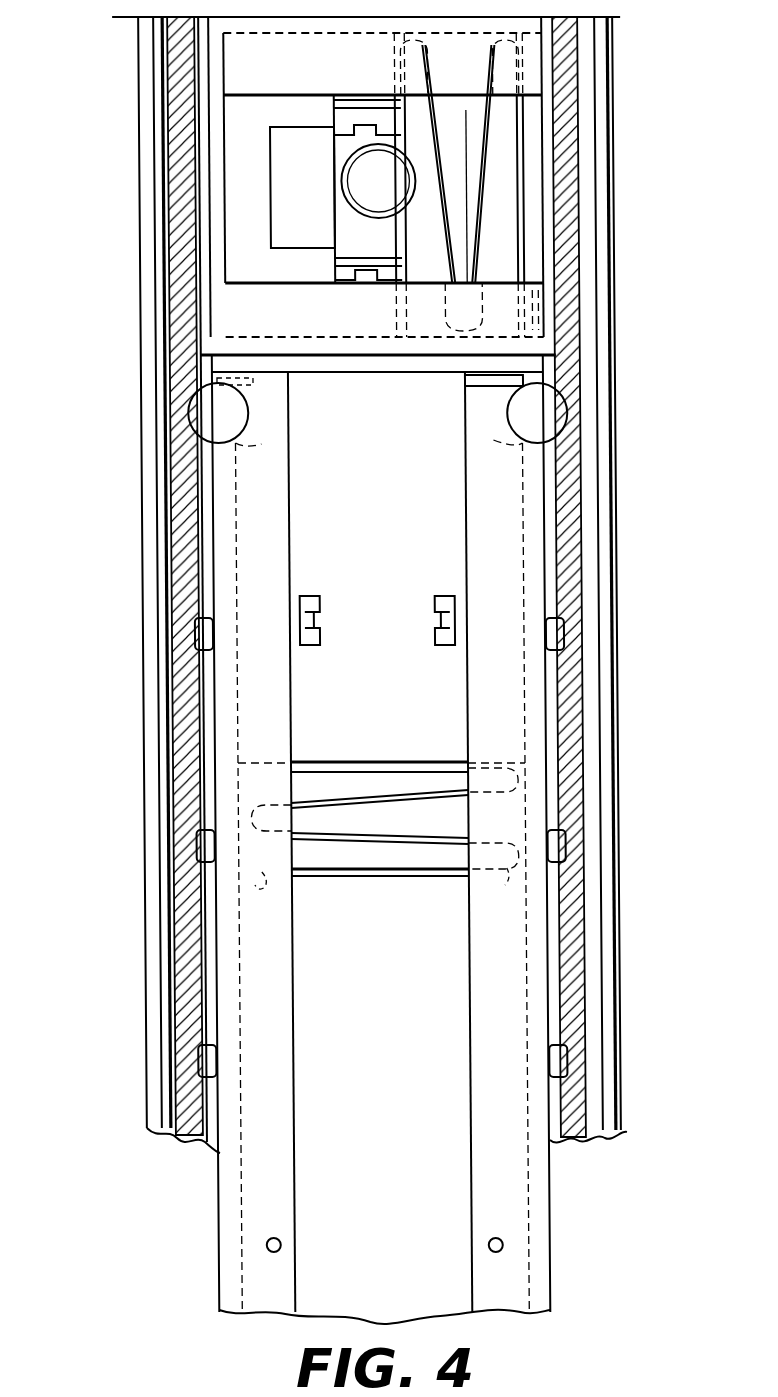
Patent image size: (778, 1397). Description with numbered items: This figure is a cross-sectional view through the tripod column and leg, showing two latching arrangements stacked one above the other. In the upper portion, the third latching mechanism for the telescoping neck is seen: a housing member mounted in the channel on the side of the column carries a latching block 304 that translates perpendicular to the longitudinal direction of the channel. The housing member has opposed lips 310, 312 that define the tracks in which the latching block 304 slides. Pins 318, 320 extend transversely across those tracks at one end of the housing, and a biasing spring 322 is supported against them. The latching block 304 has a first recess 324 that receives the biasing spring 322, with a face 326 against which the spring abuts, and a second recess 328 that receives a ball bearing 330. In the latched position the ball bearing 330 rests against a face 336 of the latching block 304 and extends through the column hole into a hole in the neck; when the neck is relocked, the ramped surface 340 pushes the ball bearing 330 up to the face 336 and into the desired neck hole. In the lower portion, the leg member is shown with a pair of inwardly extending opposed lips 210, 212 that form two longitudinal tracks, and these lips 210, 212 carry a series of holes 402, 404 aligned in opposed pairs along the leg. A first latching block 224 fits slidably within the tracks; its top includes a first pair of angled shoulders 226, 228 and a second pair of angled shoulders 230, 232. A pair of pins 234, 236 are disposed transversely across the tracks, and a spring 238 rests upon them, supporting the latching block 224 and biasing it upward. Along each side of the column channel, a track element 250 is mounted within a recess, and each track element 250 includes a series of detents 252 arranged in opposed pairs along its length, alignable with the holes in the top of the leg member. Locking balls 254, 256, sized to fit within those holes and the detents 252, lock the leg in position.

The lip 210 is at (278, 1273).
The lip 212 is at (497, 1274).
The first latching block 224 is at (440, 516).
The angled shoulder 226 is at (220, 378).
The angled shoulder 228 is at (530, 380).
The angled shoulder 230 is at (258, 444).
The angled shoulder 232 is at (490, 440).
The pin 234 is at (262, 880).
The pin 236 is at (508, 875).
The spring 238 is at (362, 878).
The track element 250 is at (190, 940).
The detent 252 is at (205, 1065).
The locking ball 254 is at (196, 414).
The locking ball 256 is at (562, 416).
The latching block 304 is at (248, 128).
The lip 310 is at (232, 300).
The lip 312 is at (226, 66).
The pin 318 is at (530, 298).
The pin 320 is at (530, 72).
The biasing spring 322 is at (523, 243).
The first recess 324 is at (507, 194).
The face 326 is at (427, 114).
The second recess 328 is at (290, 206).
The ball bearing 330 is at (358, 186).
The face 336 is at (381, 100).
The ramped surface 340 is at (347, 146).
The hole 402 is at (257, 1245).
The hole 404 is at (493, 1245).